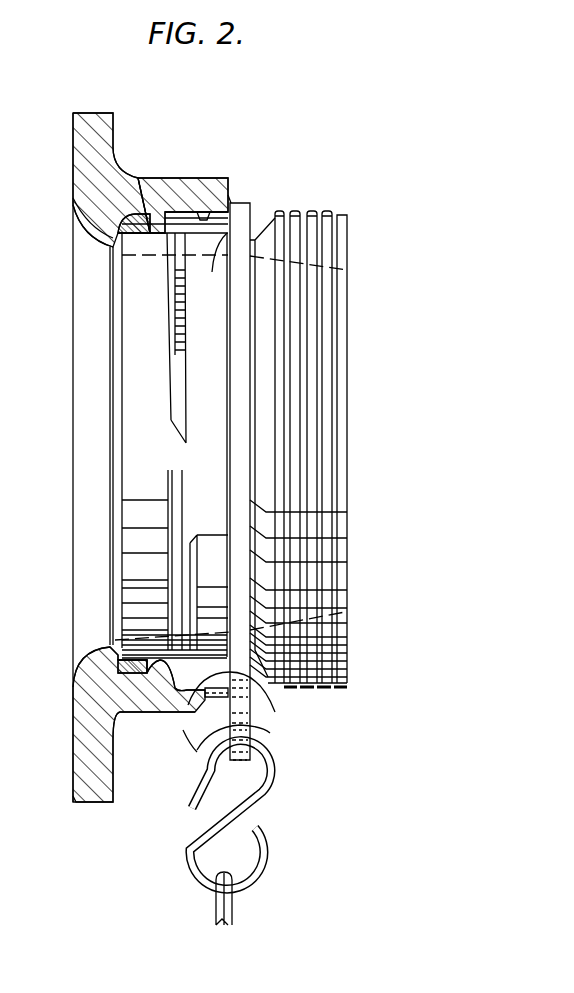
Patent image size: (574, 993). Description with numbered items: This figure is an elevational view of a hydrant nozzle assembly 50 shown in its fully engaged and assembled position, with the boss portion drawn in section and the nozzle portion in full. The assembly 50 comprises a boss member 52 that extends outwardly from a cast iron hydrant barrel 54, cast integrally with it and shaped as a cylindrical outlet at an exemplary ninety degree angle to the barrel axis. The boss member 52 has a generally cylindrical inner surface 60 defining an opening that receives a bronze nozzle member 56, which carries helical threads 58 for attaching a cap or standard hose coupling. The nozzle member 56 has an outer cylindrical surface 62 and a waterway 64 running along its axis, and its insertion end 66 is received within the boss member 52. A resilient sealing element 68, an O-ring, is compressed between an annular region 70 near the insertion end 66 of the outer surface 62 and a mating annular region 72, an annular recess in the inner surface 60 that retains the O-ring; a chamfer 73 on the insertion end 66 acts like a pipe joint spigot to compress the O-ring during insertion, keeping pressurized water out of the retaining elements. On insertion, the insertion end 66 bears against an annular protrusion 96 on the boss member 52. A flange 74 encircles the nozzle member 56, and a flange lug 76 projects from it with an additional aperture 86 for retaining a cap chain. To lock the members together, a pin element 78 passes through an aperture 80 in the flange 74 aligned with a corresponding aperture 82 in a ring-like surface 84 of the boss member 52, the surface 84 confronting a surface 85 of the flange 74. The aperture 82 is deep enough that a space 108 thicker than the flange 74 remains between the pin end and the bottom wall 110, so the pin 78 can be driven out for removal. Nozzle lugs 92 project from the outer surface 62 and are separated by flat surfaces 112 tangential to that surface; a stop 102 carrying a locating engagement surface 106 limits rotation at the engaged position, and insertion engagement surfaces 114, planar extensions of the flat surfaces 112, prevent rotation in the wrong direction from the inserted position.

The nozzle assembly 50 is at (290, 158).
The boss member 52 is at (153, 178).
The hydrant barrel 54 is at (113, 130).
The nozzle member 56 is at (257, 200).
The helical threads 58 is at (312, 210).
The inner cylindrical surface 60 is at (203, 217).
The outer cylindrical surface 62 is at (152, 242).
The waterway 64 is at (330, 283).
The insertion end 66 is at (112, 498).
The resilient sealing element 68 is at (105, 223).
The annular region 70 is at (140, 357).
The mating annular region 72 is at (132, 216).
The chamfer 73 is at (118, 418).
The flange 74 is at (238, 203).
The flange lug 76 is at (260, 795).
The pin element 78 is at (205, 705).
The aperture 80 is at (257, 700).
The aperture 82 is at (192, 698).
The ring-like surface 84 is at (230, 195).
The surface 85 is at (213, 262).
The additional aperture 86 is at (267, 730).
The nozzle lugs 92 is at (183, 302).
The annular protrusion 96 is at (110, 647).
The stop 102 is at (210, 533).
The locating engagement surface 106 is at (213, 555).
The space 108 is at (250, 677).
The bottom wall 110 is at (205, 686).
The flat surfaces 112 is at (178, 418).
The insertion engagement surfaces 114 is at (220, 512).